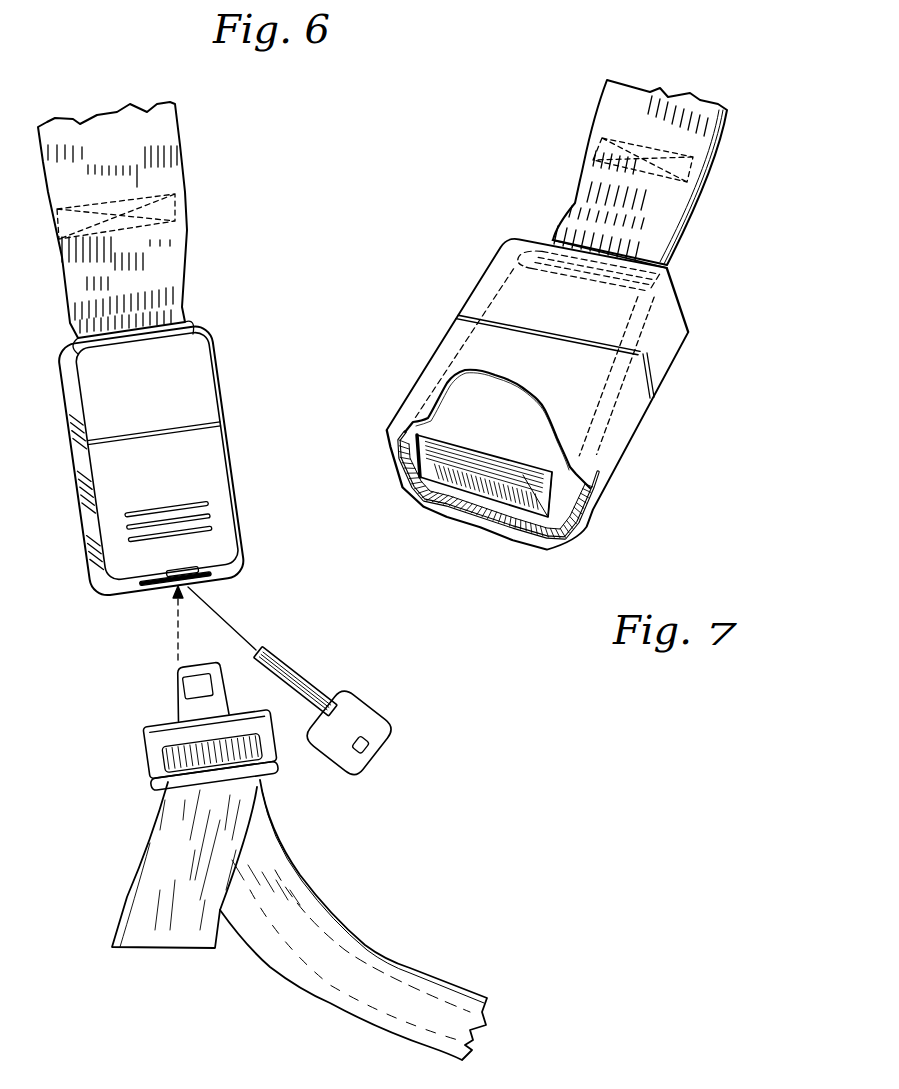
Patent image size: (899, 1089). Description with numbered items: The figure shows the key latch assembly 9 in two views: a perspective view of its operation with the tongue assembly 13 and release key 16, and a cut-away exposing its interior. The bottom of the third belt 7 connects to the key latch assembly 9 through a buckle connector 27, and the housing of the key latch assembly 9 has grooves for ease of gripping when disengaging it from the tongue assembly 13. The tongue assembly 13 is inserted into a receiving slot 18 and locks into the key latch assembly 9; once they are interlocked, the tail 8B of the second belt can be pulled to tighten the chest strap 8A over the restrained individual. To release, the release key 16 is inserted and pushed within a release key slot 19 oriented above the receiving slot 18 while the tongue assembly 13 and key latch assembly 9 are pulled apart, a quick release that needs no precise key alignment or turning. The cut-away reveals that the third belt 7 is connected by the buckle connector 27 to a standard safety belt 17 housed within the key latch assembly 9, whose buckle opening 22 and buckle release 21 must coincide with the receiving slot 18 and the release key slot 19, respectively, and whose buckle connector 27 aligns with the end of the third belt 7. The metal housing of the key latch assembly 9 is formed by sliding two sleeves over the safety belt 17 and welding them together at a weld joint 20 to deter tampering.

In FIG. 6, the third belt 7 is at (165, 132).
In FIG. 7, the third belt 7 is at (673, 177).
In FIG. 6, the chest strap 8A is at (308, 897).
In FIG. 6, the tail 8B is at (158, 860).
In FIG. 6, the key latch assembly 9 is at (193, 355).
In FIG. 7, the key latch assembly 9 is at (668, 342).
In FIG. 6, the tongue assembly 13 is at (150, 743).
In FIG. 6, the release key 16 is at (302, 680).
In FIG. 7, the safety belt 17 is at (577, 470).
In FIG. 6, the receiving slot 18 is at (212, 578).
In FIG. 6, the release key slot 19 is at (170, 587).
In FIG. 6, the weld joint 20 is at (210, 432).
In FIG. 7, the weld joint 20 is at (457, 315).
In FIG. 7, the buckle release 21 is at (520, 487).
In FIG. 7, the buckle opening 22 is at (497, 525).
In FIG. 6, the buckle connector 27 is at (187, 310).
In FIG. 7, the buckle connector 27 is at (668, 265).